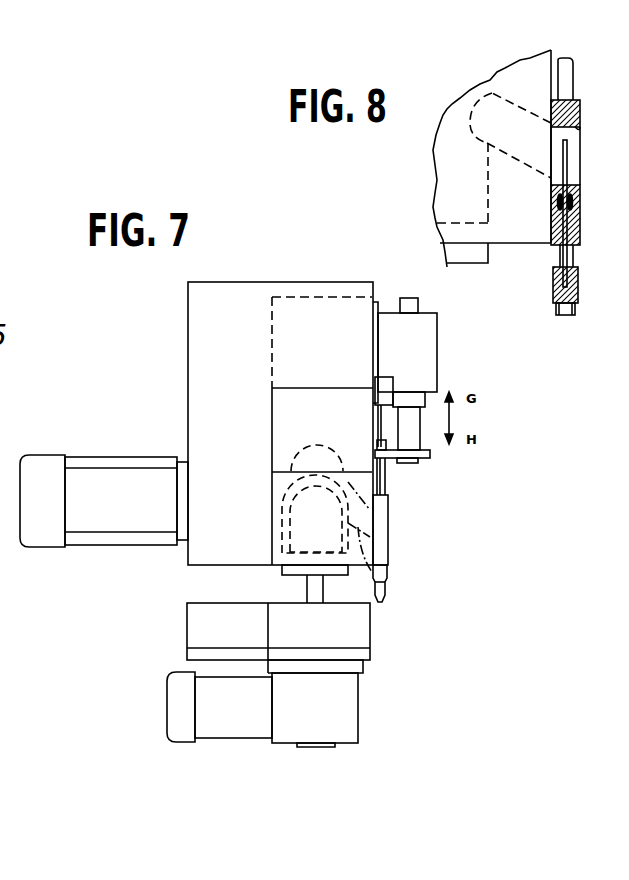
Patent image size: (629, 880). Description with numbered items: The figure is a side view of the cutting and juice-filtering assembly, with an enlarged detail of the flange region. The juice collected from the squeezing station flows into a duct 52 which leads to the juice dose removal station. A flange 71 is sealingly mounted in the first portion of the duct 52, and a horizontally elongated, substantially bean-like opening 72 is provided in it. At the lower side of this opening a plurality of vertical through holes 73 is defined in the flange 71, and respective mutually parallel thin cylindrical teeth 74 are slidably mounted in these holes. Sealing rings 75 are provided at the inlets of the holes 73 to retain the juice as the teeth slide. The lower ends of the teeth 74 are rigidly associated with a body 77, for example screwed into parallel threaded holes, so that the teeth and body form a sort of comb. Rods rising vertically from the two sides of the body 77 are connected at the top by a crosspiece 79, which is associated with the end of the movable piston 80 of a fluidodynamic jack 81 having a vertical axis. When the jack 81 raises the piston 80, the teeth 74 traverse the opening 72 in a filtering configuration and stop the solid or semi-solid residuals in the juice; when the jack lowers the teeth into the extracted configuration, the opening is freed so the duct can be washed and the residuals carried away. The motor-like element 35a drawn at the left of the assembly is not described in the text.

In FIG. 7, the motor 35a is at (48, 467).
In FIG. 7, the fluidodynamic jack 81 is at (422, 362).
In FIG. 7, the movable piston 80 is at (408, 433).
In FIG. 7, the crosspiece 79 is at (392, 462).
In FIG. 7, the flange 71 is at (388, 515).
In FIG. 7, the duct 52 is at (395, 588).
In FIG. 8, the opening 72 is at (580, 128).
In FIG. 8, the cylindrical teeth 74 is at (570, 153).
In FIG. 8, the sealing rings 75 is at (573, 202).
In FIG. 8, the vertical through holes 73 is at (578, 227).
In FIG. 8, the body 77 is at (578, 302).